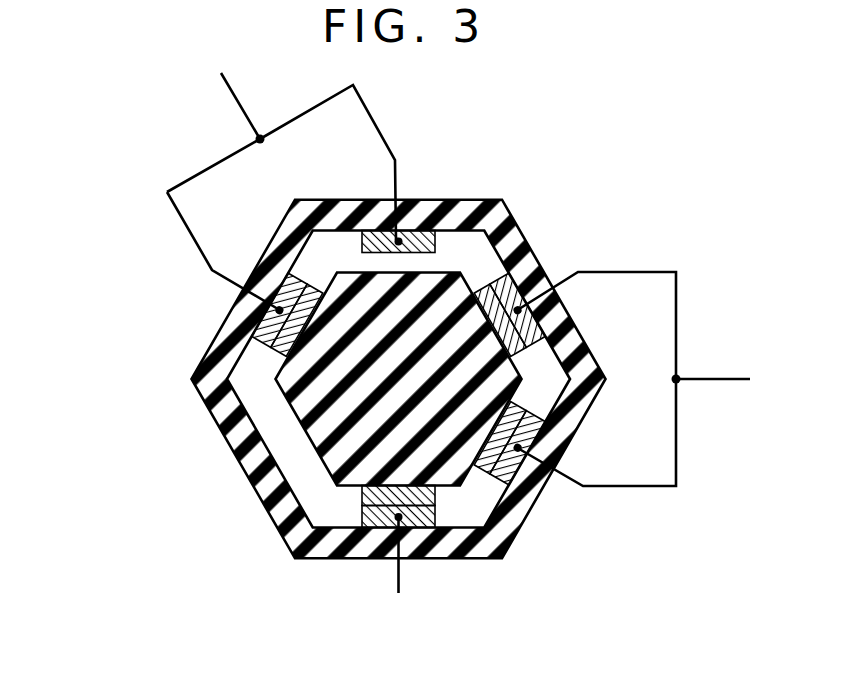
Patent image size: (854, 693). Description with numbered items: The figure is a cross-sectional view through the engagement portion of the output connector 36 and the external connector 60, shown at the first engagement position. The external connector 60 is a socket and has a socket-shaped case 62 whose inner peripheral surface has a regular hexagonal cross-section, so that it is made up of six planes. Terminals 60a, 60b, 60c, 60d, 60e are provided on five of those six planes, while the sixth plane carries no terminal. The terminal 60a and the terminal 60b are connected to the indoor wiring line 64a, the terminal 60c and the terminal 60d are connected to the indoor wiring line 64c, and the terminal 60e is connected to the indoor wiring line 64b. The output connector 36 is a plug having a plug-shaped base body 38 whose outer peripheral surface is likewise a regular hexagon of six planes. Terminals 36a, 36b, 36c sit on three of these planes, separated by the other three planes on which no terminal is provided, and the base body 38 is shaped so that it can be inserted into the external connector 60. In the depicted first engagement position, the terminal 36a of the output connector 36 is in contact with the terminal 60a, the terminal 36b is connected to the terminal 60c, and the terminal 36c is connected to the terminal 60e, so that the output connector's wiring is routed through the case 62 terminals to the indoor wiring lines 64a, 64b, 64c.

The output connector 36 is at (458, 497).
The terminal 36a is at (280, 347).
The terminal 36b is at (478, 290).
The terminal 36c is at (406, 500).
The base body 38 is at (355, 432).
The external connector 60 is at (505, 564).
The terminal 60a is at (265, 323).
The terminal 60b is at (420, 230).
The terminal 60c is at (500, 283).
The terminal 60d is at (540, 486).
The terminal 60e is at (383, 520).
The case 62 is at (273, 503).
The indoor wiring line 64a is at (240, 102).
The indoor wiring line 64b is at (398, 582).
The indoor wiring line 64c is at (712, 378).